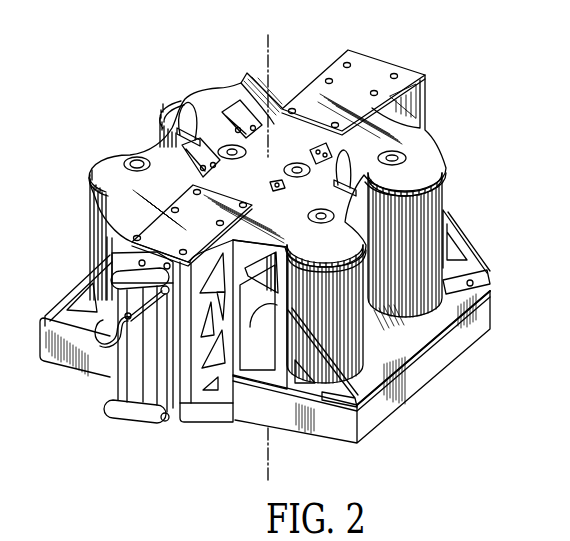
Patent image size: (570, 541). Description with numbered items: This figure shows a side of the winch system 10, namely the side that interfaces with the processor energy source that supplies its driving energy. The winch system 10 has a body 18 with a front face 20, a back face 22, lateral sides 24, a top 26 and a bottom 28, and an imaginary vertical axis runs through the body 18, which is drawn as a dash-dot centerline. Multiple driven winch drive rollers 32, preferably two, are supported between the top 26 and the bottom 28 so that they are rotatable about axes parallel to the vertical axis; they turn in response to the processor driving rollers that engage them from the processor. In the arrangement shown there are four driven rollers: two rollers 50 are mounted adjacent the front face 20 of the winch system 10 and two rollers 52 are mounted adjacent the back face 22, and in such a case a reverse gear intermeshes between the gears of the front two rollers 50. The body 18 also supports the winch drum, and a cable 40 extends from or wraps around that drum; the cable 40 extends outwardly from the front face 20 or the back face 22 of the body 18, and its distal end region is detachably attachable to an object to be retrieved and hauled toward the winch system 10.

The winch system 10 is at (383, 53).
The body 18 is at (436, 325).
The front face 20 is at (267, 403).
The back face 22 is at (478, 283).
The lateral sides 24 is at (472, 293).
The top 26 is at (234, 84).
The bottom 28 is at (402, 397).
The driven winch drive rollers 32 is at (432, 243).
The cable 40 is at (115, 327).
The rollers 50 is at (89, 177).
The rollers 52 is at (158, 120).